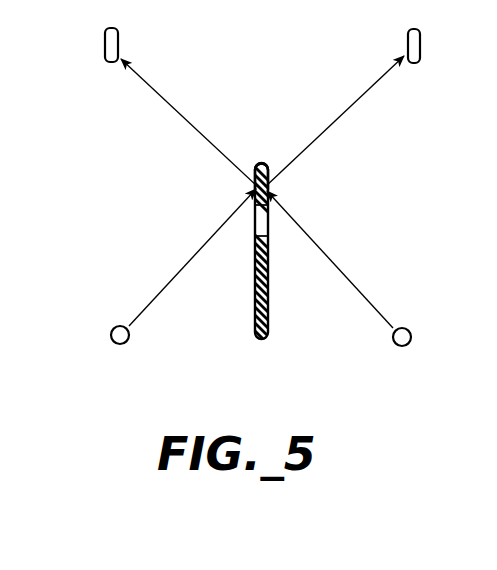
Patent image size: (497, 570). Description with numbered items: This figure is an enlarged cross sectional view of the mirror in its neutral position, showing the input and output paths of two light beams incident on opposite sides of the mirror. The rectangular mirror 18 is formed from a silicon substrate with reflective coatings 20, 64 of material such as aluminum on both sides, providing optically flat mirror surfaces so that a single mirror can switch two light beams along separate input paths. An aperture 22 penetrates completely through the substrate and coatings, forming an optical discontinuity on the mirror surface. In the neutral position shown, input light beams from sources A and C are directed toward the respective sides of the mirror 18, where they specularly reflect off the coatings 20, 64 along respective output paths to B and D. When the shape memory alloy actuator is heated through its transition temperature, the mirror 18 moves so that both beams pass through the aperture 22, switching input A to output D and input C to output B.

The mirror 18 is at (254, 288).
The coating 20 is at (253, 171).
The aperture 22 is at (259, 233).
The reflective coating 64 is at (271, 171).
The source A is at (112, 333).
The output path B is at (105, 48).
The source C is at (393, 340).
The output path D is at (408, 50).